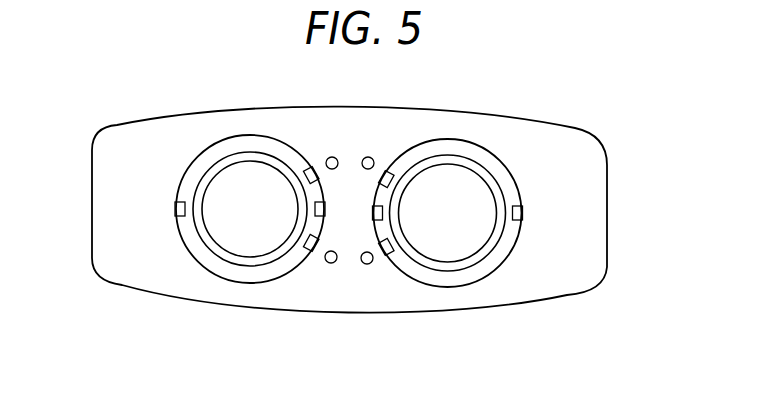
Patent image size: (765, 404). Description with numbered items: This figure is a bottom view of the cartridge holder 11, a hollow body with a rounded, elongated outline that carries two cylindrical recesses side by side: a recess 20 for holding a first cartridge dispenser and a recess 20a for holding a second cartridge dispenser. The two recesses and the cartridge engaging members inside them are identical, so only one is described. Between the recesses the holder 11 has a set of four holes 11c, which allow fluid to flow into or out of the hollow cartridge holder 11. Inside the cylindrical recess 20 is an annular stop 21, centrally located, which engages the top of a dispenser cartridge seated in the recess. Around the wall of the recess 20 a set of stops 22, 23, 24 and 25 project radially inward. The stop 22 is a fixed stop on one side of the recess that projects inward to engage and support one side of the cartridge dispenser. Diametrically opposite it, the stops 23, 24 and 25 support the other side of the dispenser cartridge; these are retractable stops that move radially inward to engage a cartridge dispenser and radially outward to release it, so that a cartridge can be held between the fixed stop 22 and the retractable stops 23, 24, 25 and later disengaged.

The cartridge holder 11 is at (447, 111).
The holes 11c is at (330, 263).
The recess 20 is at (498, 267).
The recess 20a is at (230, 280).
The annular stop 21 is at (470, 167).
The fixed stop 22 is at (524, 212).
The retractable stop 23 is at (383, 247).
The retractable stop 24 is at (373, 206).
The retractable stop 25 is at (387, 166).